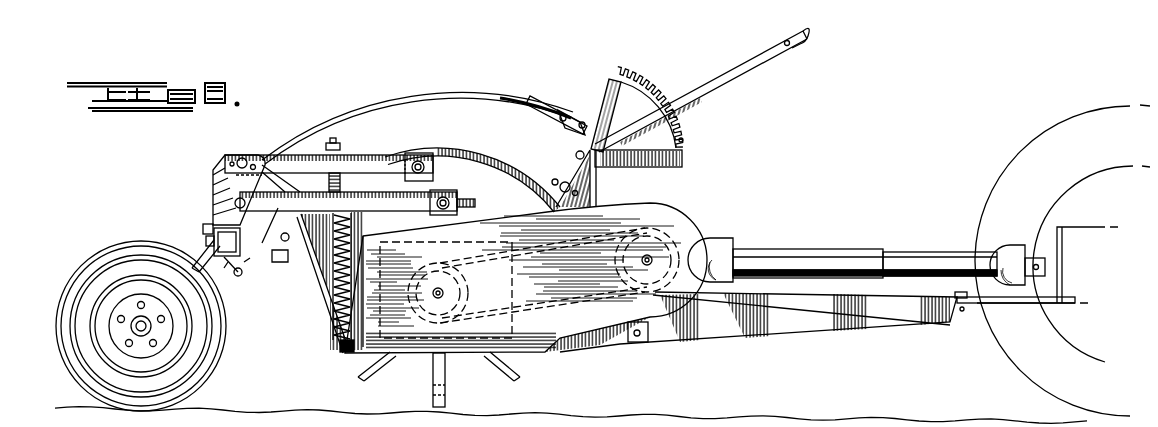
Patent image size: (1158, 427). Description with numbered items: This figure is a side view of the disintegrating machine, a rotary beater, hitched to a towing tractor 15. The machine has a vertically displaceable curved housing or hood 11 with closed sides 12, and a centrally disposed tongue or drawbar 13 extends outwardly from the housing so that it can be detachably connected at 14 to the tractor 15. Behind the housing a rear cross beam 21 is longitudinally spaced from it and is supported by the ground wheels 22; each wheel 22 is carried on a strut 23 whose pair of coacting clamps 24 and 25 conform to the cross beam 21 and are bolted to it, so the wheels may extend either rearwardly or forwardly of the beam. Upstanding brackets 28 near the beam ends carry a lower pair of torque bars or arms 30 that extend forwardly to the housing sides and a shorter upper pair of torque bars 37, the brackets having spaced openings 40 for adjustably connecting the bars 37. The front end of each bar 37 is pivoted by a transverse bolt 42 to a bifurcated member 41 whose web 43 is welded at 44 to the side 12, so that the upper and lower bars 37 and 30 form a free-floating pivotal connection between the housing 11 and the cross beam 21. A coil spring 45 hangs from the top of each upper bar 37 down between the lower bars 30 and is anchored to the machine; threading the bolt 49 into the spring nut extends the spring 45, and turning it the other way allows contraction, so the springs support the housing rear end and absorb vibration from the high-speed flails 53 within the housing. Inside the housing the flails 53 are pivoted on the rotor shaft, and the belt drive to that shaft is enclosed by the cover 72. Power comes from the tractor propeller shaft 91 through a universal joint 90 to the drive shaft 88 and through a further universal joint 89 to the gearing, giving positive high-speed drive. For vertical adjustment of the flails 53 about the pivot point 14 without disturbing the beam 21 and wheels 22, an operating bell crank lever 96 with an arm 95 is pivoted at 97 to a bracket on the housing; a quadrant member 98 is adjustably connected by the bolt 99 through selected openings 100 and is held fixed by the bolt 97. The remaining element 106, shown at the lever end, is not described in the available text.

The curved housing or hood 11 is at (470, 149).
The closed sides 12 is at (320, 298).
The tongue or drawbar 13 is at (857, 330).
The detachable connection 14 is at (957, 293).
The towing tractor 15 is at (1056, 208).
The rear cross beam 21 is at (212, 221).
The ground wheels 22 is at (62, 334).
The strut 23 is at (208, 254).
The clamp 24 is at (232, 268).
The clamp 25 is at (241, 244).
The upstanding bracket 28 is at (224, 190).
The lower torque bars or arms 30 is at (279, 210).
The upper torque bars 37 is at (284, 157).
The spaced openings 40 is at (253, 163).
The bifurcated member 41 is at (425, 160).
The transverse bolt 42 is at (412, 163).
The web 43 is at (447, 154).
The weld 44 is at (478, 153).
The coil spring 45 is at (330, 333).
The bolt 49 is at (333, 148).
The flail or impact member 53 is at (446, 369).
The cover 72 is at (655, 212).
The drive shaft 88 is at (886, 248).
The universal joint 89 is at (722, 240).
The universal joint 90 is at (1012, 287).
The propeller or drive shaft of the tractor 91 is at (1040, 278).
The arm 95 is at (562, 120).
The operating bell crank lever 96 is at (746, 58).
The pivot bolt 97 is at (575, 156).
The quadrant member 98 is at (645, 168).
The bolt 99 is at (572, 186).
The openings 100 is at (580, 194).
The handle grip 106 is at (800, 46).